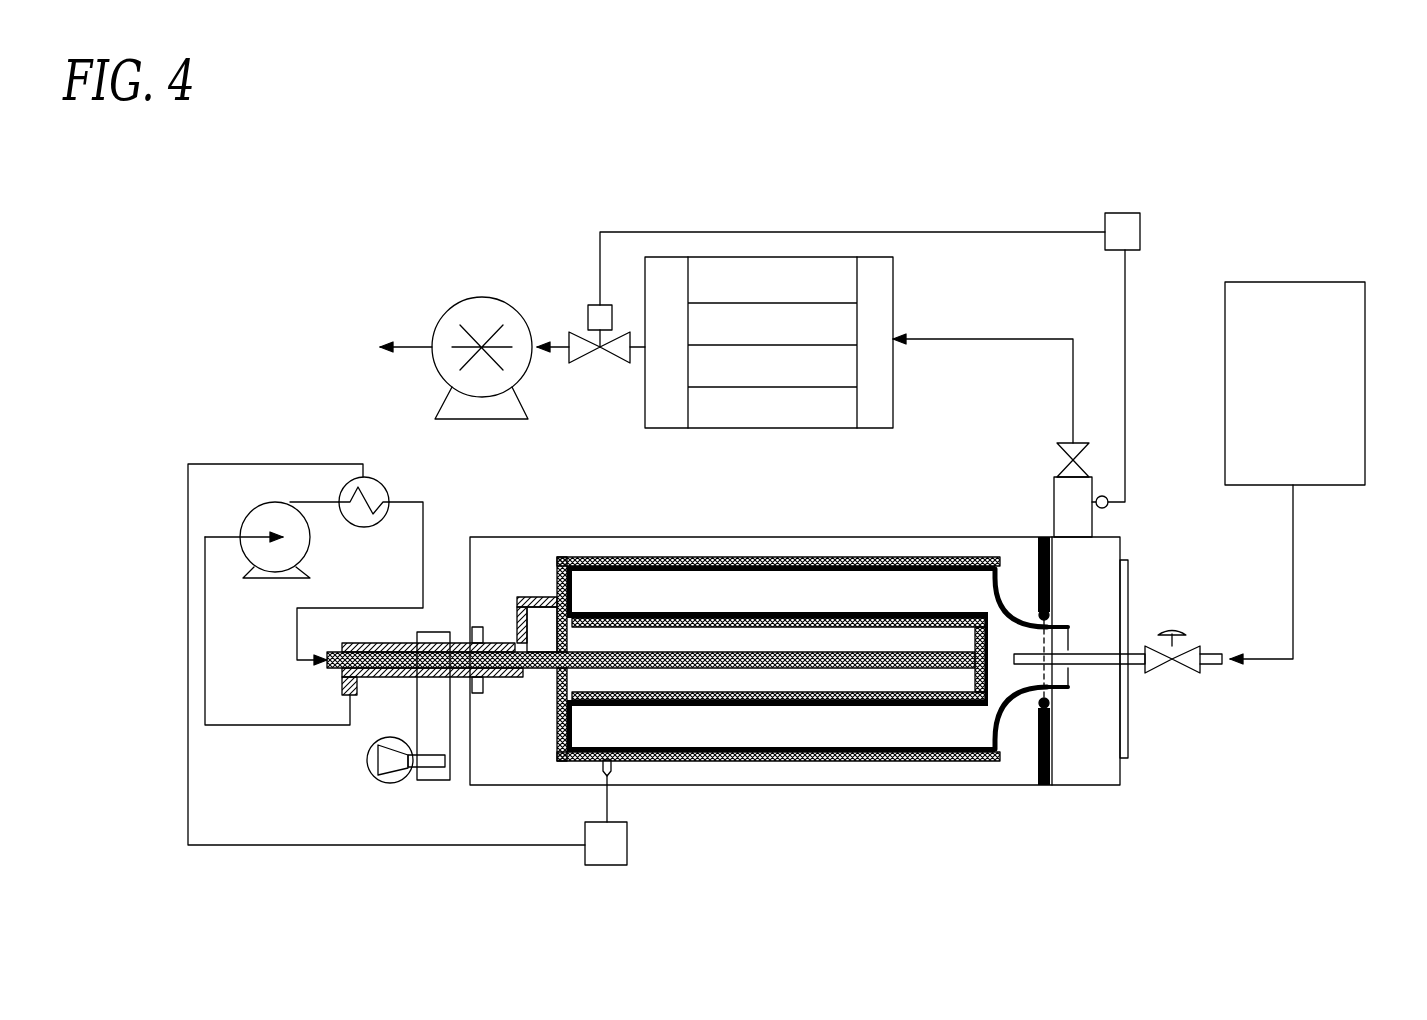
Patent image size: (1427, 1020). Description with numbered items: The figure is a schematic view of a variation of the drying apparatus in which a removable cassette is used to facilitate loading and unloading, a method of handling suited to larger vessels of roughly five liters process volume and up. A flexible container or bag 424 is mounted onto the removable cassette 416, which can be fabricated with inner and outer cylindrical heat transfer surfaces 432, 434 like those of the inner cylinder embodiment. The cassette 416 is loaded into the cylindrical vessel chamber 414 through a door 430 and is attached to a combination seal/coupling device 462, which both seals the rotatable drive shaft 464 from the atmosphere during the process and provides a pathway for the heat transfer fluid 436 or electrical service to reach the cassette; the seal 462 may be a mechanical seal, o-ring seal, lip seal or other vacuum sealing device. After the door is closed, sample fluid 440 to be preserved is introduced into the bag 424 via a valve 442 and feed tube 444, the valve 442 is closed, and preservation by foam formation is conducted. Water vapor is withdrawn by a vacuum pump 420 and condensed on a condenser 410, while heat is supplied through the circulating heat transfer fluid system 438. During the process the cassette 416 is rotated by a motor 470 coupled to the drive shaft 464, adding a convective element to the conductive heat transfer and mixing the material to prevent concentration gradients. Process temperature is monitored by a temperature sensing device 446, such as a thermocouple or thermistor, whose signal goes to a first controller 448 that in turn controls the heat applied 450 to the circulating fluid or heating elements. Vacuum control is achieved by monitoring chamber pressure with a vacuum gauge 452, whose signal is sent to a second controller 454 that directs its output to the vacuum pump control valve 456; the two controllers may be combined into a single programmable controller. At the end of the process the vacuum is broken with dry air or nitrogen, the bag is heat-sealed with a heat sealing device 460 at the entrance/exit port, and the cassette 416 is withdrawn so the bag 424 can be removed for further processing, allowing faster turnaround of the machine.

The condenser 410 is at (767, 257).
The cylindrical vessel chamber 414 is at (1087, 786).
The removable cassette 416 is at (880, 772).
The vacuum pump 420 is at (462, 303).
The flexible container or bag 424 is at (1010, 718).
The door 430 is at (1128, 703).
The inner cylindrical heat transfer surface 432 is at (815, 612).
The outer cylindrical heat transfer surface 434 is at (753, 557).
The heat transfer fluid 436 is at (640, 652).
The circulating heat transfer fluid system 438 is at (424, 525).
The sample fluid 440 is at (1347, 487).
The valve 442 is at (1200, 646).
The feed tube 444 is at (1103, 657).
The temperature sensing device 446 is at (612, 765).
The first controller 448 is at (627, 858).
The heat applied 450 is at (382, 484).
The vacuum gauge 452 is at (1108, 500).
The second controller 454 is at (1118, 214).
The vacuum pump control valve 456 is at (588, 312).
The heat sealing device 460 is at (1040, 537).
The combination seal/coupling device 462 is at (482, 694).
The rotatable drive shaft 464 is at (375, 698).
The motor 470 is at (394, 784).